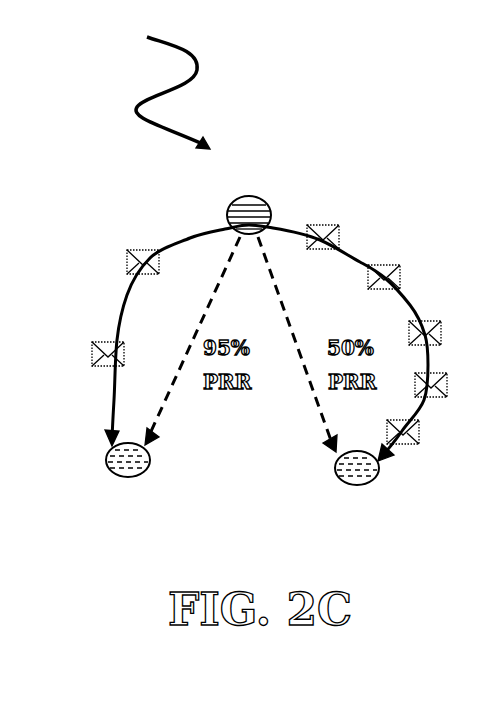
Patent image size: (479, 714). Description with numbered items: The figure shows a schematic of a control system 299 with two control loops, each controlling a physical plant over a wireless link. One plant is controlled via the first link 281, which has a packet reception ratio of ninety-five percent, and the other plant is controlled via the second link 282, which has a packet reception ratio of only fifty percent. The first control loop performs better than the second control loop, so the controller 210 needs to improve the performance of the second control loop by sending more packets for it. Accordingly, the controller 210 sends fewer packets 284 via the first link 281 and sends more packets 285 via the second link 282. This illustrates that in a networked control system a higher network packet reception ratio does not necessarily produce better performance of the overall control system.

The control system 299 is at (163, 25).
The controller 210 is at (258, 203).
The packets 284 is at (134, 255).
The packets 285 is at (396, 265).
The first link 281 is at (167, 418).
The second link 282 is at (322, 398).